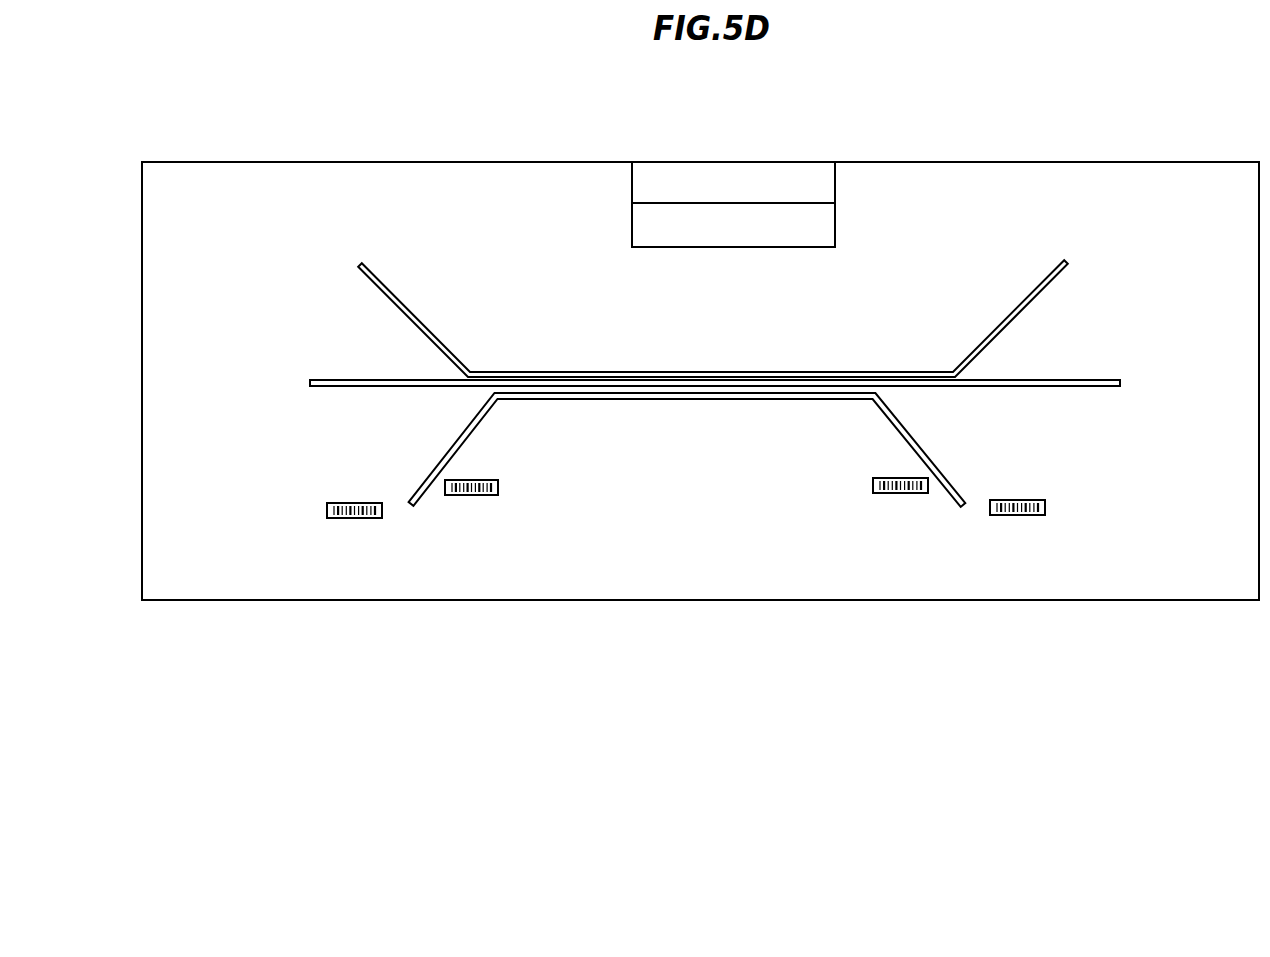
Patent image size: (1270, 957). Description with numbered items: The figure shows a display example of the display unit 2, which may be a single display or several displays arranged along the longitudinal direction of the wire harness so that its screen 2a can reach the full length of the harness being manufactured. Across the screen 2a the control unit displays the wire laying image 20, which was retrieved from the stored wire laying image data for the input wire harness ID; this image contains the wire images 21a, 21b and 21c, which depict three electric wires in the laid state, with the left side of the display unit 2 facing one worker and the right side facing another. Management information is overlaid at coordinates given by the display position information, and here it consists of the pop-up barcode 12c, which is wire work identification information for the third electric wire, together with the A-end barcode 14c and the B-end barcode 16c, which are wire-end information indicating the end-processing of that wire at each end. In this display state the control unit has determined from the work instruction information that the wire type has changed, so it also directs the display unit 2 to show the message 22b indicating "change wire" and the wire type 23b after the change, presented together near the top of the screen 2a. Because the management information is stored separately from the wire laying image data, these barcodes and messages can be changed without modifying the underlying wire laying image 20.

The display unit 2 is at (872, 161).
The screen 2a is at (967, 178).
The message 22b is at (632, 180).
The wire type 23b is at (632, 225).
The wire laying image 20 is at (763, 399).
The wire image 21a is at (1033, 302).
The wire image 21b is at (1083, 388).
The wire image 21c is at (950, 492).
The pop-up barcode 12c is at (352, 518).
The A-end barcode 14c is at (470, 496).
The B-end barcode 16c is at (880, 494).